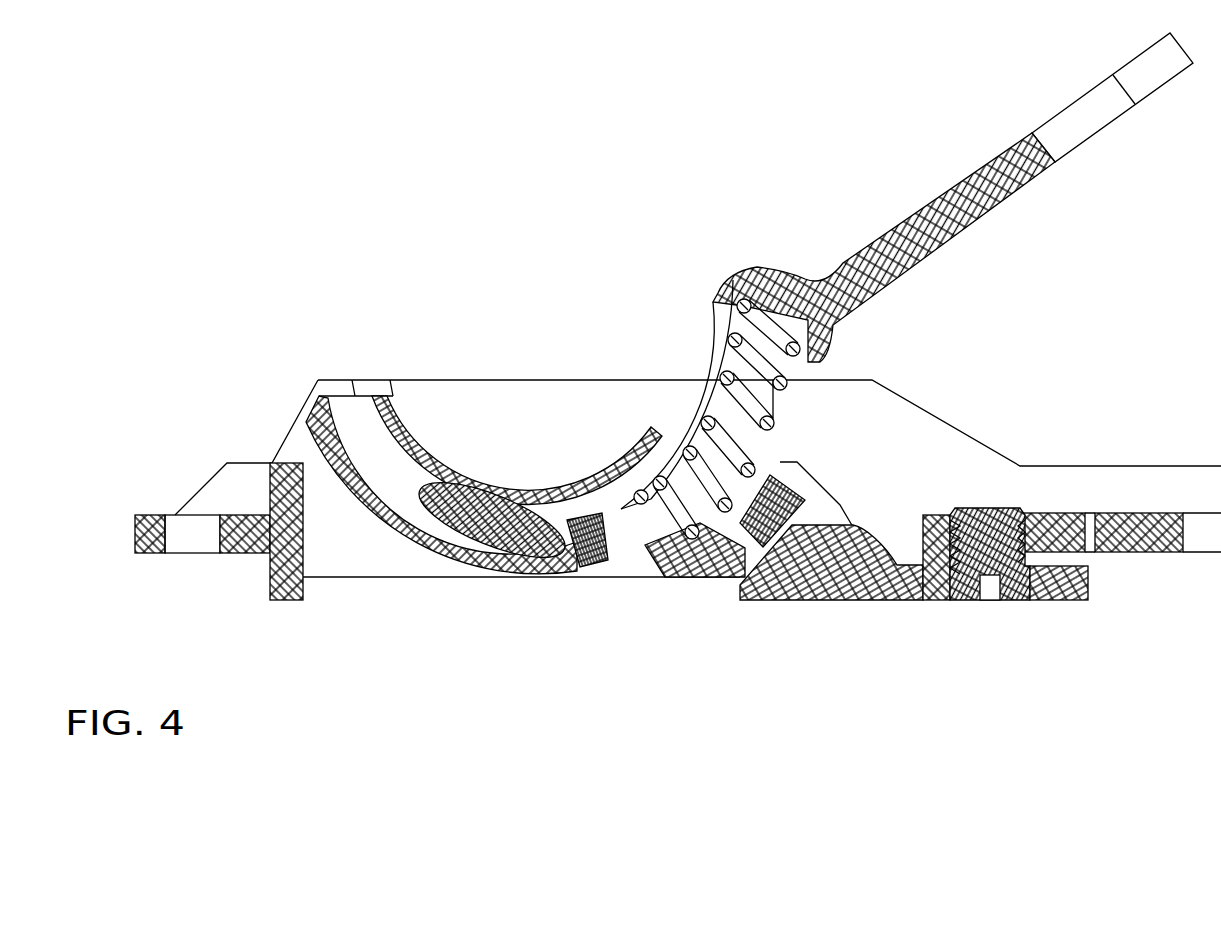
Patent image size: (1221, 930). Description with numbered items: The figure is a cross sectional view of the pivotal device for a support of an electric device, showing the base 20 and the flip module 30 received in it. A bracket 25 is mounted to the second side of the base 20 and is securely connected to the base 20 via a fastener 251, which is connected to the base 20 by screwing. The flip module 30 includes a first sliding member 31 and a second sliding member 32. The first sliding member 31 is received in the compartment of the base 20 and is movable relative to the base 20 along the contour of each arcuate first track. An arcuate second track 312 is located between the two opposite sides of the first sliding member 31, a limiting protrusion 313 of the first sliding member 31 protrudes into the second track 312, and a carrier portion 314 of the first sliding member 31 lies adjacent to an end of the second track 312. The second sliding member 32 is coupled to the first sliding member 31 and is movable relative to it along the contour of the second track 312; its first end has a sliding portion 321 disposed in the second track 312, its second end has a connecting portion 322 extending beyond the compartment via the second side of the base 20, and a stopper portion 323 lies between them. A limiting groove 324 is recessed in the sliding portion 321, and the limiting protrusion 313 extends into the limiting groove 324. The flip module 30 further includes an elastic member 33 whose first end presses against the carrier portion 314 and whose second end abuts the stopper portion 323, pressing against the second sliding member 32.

The base 20 is at (320, 345).
The bracket 25 is at (832, 575).
The fastener 251 is at (982, 547).
The flip module 30 is at (642, 255).
The first sliding member 31 is at (555, 551).
The second track 312 is at (380, 460).
The limiting protrusion 313 is at (575, 555).
The carrier portion 314 is at (690, 560).
The sliding portion 321 is at (505, 530).
The second sliding member 32 is at (903, 271).
The connecting portion 322 is at (1000, 178).
The stopper portion 323 is at (755, 277).
The limiting groove 324 is at (677, 473).
The elastic member 33 is at (700, 355).